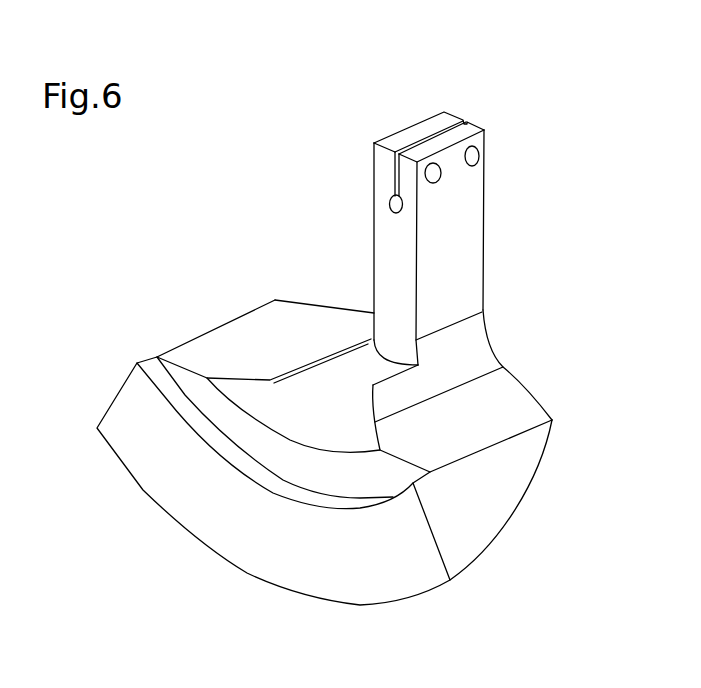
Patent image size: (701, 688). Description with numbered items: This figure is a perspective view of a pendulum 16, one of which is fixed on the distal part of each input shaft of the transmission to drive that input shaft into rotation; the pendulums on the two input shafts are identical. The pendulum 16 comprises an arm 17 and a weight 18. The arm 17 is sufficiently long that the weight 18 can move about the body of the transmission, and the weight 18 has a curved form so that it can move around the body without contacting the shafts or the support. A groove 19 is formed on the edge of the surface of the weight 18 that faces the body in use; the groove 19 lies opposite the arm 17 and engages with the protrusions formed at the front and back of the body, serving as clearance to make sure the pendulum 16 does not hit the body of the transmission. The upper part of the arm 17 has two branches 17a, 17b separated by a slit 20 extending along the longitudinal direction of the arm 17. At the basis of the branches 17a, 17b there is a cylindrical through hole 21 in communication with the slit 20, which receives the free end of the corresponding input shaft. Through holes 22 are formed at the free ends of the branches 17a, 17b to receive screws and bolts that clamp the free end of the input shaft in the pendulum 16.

The pendulum 16 is at (607, 203).
The arm 17 is at (485, 273).
The branch 17a is at (482, 127).
The branch 17b is at (417, 128).
The weight 18 is at (485, 552).
The groove 19 is at (283, 480).
The slit 20 is at (393, 178).
The cylindrical through hole 21 is at (390, 208).
The through holes 22 is at (432, 182).